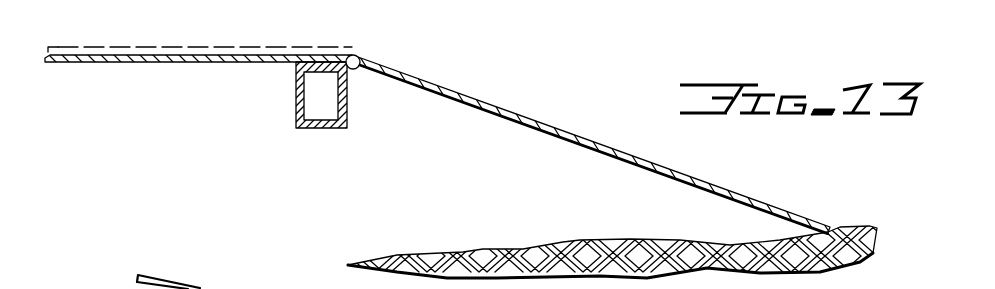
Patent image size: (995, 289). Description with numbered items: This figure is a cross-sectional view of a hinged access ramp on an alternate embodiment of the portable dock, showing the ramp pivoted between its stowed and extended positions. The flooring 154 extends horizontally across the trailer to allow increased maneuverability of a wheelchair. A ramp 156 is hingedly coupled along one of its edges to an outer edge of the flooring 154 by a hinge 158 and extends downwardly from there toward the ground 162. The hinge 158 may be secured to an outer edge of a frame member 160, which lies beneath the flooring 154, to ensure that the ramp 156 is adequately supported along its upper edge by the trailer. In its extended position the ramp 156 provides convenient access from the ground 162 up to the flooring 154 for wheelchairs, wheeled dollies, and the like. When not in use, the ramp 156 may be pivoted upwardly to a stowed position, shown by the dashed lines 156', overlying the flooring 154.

The flooring 154 is at (207, 63).
The ramp 156 is at (593, 146).
The ramp in stowed position 156' is at (200, 33).
The hinge 158 is at (360, 56).
The frame member 160 is at (296, 106).
The ground 162 is at (857, 226).